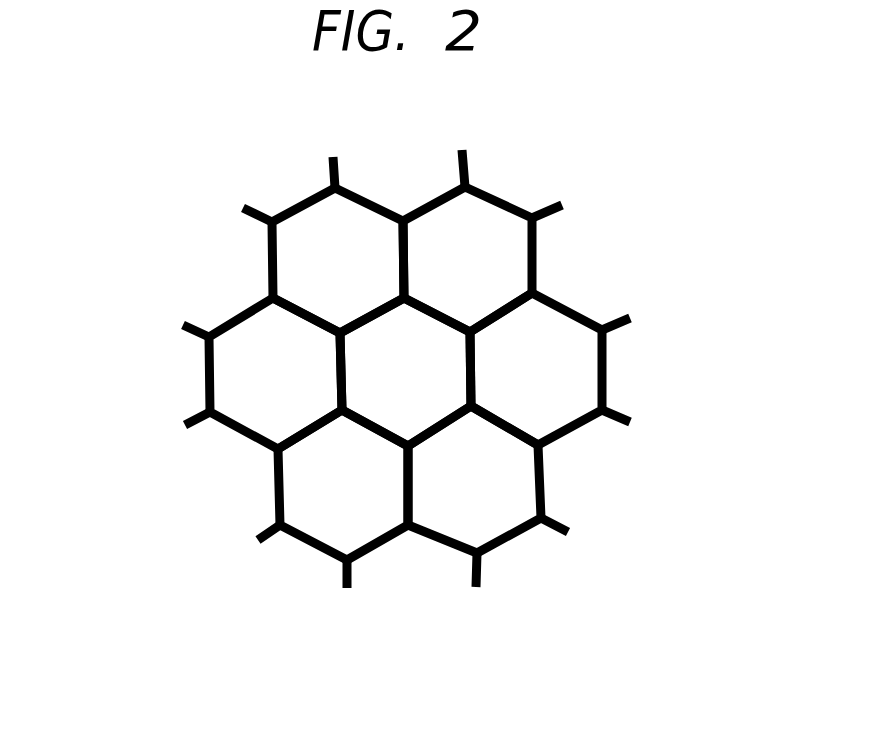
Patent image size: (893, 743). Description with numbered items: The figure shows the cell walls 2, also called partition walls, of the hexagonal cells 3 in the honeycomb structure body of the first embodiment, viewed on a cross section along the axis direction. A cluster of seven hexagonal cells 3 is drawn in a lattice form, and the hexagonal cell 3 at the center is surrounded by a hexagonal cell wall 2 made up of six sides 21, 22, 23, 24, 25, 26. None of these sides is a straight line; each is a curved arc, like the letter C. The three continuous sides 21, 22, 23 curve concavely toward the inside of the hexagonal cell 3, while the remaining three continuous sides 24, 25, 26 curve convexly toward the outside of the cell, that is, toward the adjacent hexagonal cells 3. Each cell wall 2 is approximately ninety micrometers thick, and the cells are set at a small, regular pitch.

The cell wall 2 is at (503, 190).
The hexagonal cell 3 is at (448, 228).
The side 21 is at (471, 369).
The side 22 is at (441, 314).
The side 23 is at (373, 327).
The side 24 is at (341, 380).
The side 25 is at (357, 430).
The side 26 is at (447, 432).